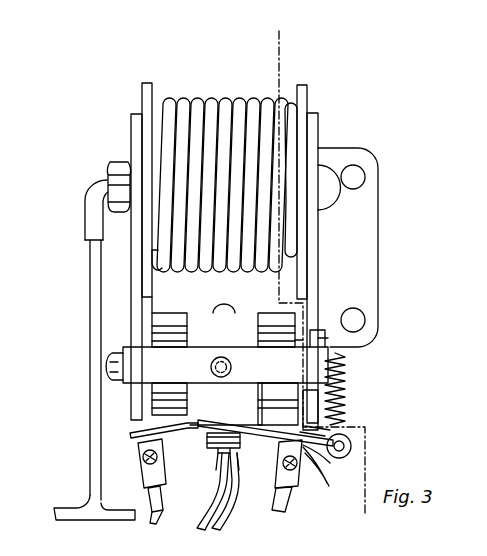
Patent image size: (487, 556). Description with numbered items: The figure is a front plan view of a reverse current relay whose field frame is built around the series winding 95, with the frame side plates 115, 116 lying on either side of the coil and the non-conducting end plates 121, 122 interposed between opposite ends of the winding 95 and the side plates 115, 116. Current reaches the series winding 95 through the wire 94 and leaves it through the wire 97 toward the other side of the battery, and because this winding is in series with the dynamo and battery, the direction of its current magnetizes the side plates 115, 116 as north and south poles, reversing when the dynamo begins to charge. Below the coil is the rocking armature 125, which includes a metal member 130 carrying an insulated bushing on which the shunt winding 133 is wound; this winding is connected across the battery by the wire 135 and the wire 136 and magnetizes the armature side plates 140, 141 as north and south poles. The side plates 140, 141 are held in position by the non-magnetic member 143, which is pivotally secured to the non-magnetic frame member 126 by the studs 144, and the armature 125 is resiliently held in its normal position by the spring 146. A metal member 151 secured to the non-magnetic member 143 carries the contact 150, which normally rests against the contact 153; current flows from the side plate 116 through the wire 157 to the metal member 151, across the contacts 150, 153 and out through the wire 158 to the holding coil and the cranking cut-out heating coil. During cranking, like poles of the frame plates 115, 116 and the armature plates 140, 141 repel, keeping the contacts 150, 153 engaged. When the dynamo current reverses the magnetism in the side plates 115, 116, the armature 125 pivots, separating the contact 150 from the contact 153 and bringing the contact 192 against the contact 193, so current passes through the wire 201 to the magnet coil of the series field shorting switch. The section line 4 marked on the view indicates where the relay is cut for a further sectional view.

The section line 4- 4 is at (258, 31).
The wire 94 is at (67, 508).
The series winding 95 is at (244, 98).
The wire 97 is at (112, 521).
The side plate 115 is at (130, 125).
The side plate 116 is at (320, 128).
The non-conducting end plate 121 is at (150, 93).
The non-conducting end plate 122 is at (298, 85).
The rocking armature 125 is at (252, 412).
The non-magnetic member 126 is at (398, 248).
The metal member 130 is at (220, 455).
The shunt winding 133 is at (160, 340).
The wire 135 is at (223, 522).
The wire 136 is at (192, 524).
The side plate 140 is at (162, 410).
The side plate 141 is at (168, 318).
The non-magnetic member 143 is at (197, 426).
The stud 144 is at (230, 358).
The spring 146 is at (341, 420).
The contact 150 is at (137, 445).
The metal member 151 is at (241, 470).
The contact 153 is at (142, 462).
The wire 157 is at (272, 448).
The wire 158 is at (154, 522).
The contact 192 is at (341, 459).
The contact 193 is at (333, 470).
The wire 201 is at (291, 509).